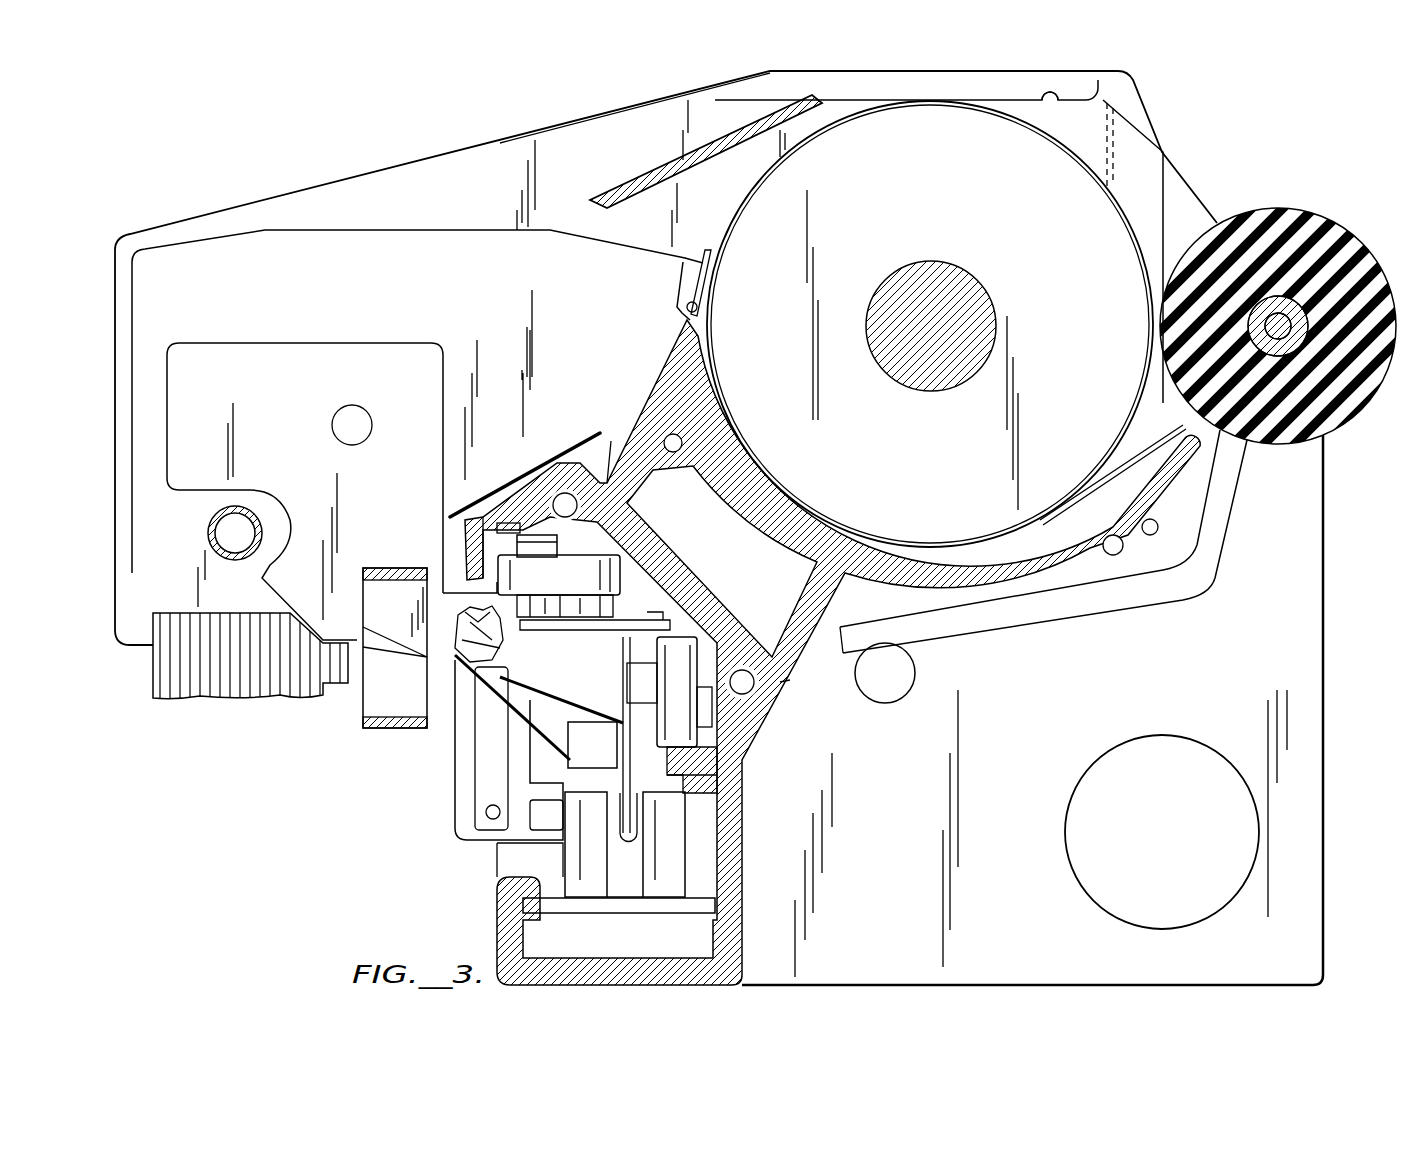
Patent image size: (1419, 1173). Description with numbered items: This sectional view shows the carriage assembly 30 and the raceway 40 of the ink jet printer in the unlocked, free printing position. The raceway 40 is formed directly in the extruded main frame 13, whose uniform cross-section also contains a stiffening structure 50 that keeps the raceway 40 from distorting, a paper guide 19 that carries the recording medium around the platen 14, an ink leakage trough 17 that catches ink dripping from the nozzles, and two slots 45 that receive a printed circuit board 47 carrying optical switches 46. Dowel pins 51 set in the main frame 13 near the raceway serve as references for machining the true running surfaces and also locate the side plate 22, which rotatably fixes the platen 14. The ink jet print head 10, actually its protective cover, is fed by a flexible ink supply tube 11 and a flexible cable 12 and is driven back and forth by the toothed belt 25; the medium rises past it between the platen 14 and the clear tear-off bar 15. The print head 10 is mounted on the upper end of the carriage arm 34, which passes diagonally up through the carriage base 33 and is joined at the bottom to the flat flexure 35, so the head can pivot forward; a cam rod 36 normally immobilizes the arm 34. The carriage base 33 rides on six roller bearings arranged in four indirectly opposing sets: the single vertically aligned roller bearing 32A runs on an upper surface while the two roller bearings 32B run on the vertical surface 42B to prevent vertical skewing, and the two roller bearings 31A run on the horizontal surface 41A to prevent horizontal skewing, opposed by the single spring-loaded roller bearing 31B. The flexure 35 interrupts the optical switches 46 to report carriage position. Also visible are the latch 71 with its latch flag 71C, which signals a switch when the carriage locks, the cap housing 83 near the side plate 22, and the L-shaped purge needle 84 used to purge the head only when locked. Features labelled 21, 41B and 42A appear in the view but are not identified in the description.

The ink jet print head 10 is at (150, 291).
The flexible ink supply tube 11 is at (205, 527).
The flexible cable 12 is at (150, 686).
The main frame 13 is at (960, 578).
The platen 14 is at (1100, 204).
The tear-off bar 15 is at (668, 170).
The ink leakage trough 17 is at (606, 470).
The paper guide 19 is at (1120, 447).
The frame edge 21 is at (780, 682).
The side plate 22 is at (500, 143).
The belt 25 is at (392, 568).
The carriage assembly 30 is at (483, 667).
The roller bearings 31A is at (610, 570).
The roller bearing 31B is at (697, 727).
The roller bearings 32A is at (465, 520).
The roller bearings 32B is at (705, 760).
The carriage base 33 is at (572, 662).
The carriage arm 34 is at (410, 345).
The flat flexure 35 is at (720, 793).
The cam rod 36 is at (455, 658).
The raceway 40 is at (660, 605).
The horizontal surface 41A is at (497, 528).
The lower armature 41B is at (712, 705).
The upper plunger 42A is at (550, 537).
The vertical surface 42B is at (700, 775).
The slots 45 is at (707, 913).
The optical switches 46 is at (667, 828).
The printed circuit board 47 is at (667, 897).
The stiffening structure 50 is at (744, 570).
The dowel pins 51 is at (560, 500).
The latch 71 is at (455, 808).
The latch flag 71C is at (610, 833).
The cap housing 83 is at (882, 82).
The purge needle 84 is at (712, 262).